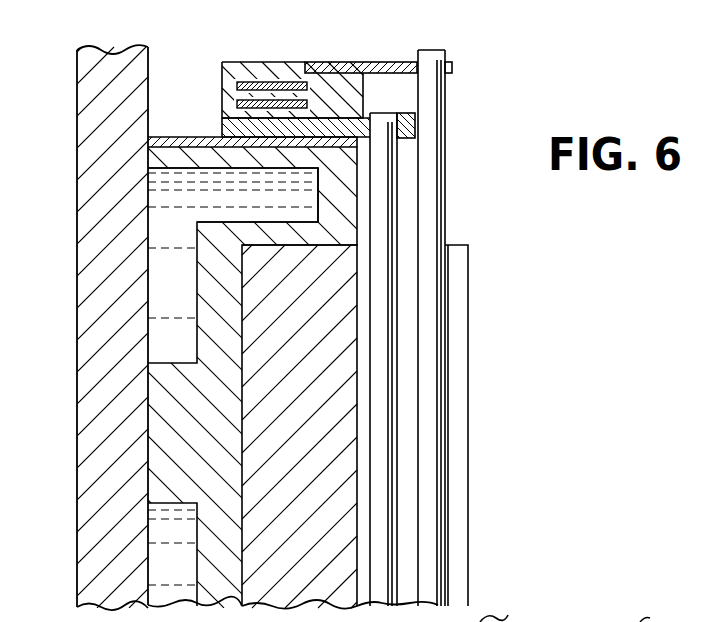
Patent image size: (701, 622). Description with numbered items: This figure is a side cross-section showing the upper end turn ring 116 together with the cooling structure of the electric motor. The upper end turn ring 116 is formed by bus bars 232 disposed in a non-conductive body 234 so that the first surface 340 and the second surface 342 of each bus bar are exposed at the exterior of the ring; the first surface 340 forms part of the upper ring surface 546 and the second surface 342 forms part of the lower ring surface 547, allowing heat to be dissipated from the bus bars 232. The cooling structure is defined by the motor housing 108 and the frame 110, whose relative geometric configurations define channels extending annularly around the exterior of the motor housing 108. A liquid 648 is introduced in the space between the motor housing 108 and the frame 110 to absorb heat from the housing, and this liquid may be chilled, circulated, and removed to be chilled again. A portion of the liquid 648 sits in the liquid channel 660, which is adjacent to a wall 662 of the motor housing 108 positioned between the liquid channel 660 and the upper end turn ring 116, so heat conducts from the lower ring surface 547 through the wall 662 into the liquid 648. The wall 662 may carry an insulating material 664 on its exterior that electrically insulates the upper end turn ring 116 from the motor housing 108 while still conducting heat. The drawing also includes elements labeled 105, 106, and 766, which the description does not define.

The tube 105 is at (385, 380).
The outer wall 106 is at (470, 332).
The motor housing 108 is at (167, 471).
The frame 110 is at (98, 432).
The upper end turn ring 116 is at (218, 106).
The bus bars 232 is at (452, 67).
The non-conductive body 234 is at (214, 104).
The first surface 340 is at (360, 62).
The second surface 342 is at (268, 147).
The upper ring surface 546 is at (233, 60).
The lower ring surface 547 is at (295, 168).
The liquid 648 is at (160, 318).
The liquid channel 660 is at (195, 213).
The wall 662 is at (293, 172).
The insulating material 664 is at (292, 166).
The element 766 is at (642, 620).